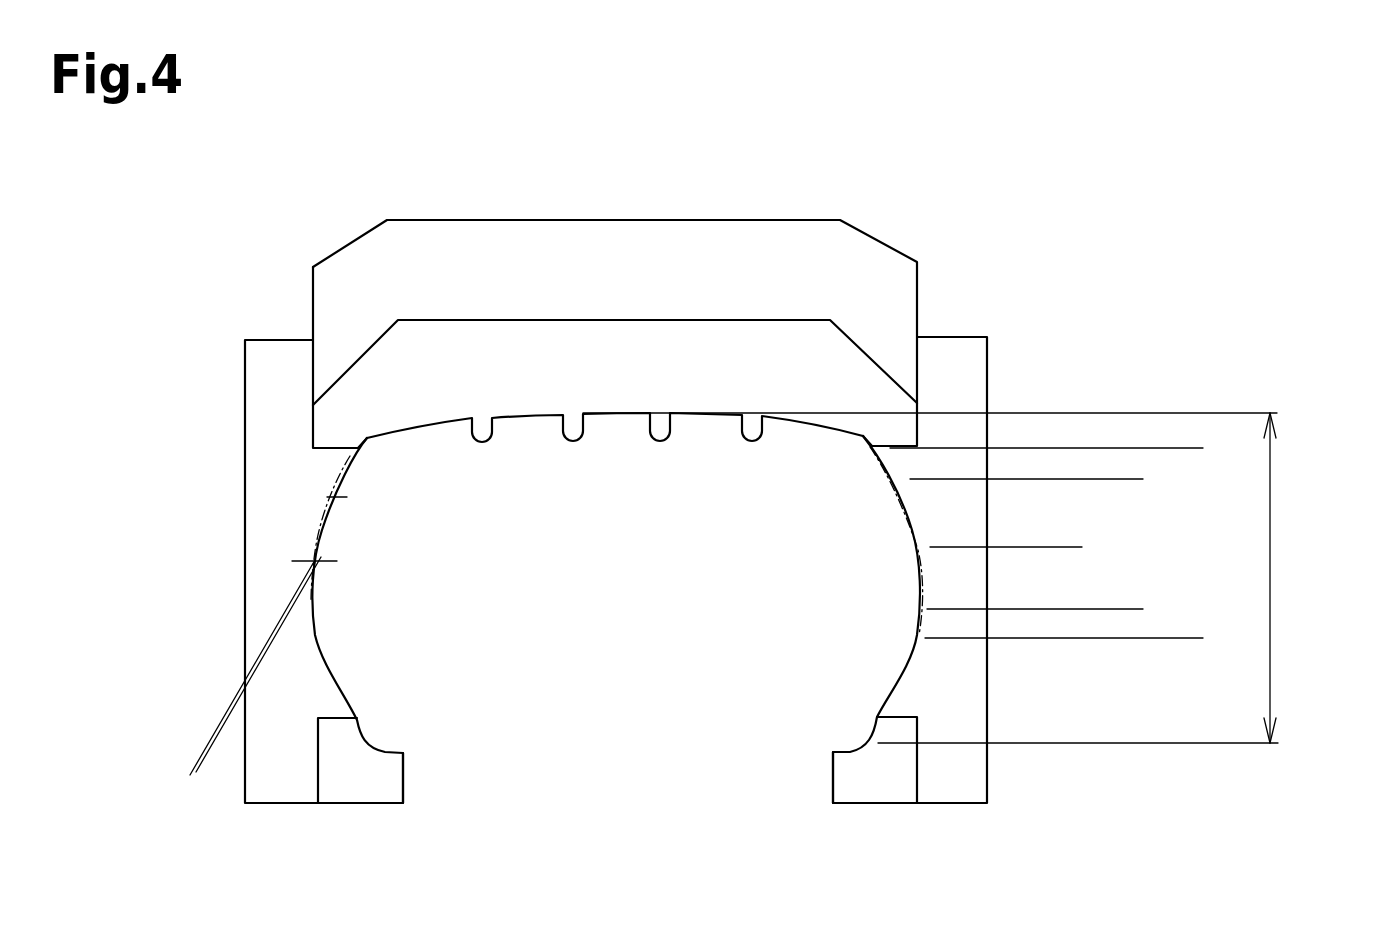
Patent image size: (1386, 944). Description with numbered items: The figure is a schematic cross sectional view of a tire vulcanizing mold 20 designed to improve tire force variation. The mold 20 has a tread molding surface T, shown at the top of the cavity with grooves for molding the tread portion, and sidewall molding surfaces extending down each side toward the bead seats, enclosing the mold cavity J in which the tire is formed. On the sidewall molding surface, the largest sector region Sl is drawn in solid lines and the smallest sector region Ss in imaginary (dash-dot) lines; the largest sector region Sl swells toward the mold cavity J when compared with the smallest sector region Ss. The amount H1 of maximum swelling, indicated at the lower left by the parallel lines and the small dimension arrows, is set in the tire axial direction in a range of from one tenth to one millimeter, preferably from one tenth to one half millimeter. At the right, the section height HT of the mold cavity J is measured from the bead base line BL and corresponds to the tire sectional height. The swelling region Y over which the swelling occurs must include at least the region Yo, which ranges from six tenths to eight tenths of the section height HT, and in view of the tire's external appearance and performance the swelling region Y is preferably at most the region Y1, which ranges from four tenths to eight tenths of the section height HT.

The vulcanizing mold 20 is at (1050, 337).
The tread molding surface T is at (615, 417).
The largest sector region Sl is at (320, 597).
The smallest sector region Ss is at (345, 496).
The mold cavity J is at (628, 640).
The amount of maximum swelling H1 is at (245, 770).
The section height HT is at (1270, 575).
The bead base line BL is at (1078, 745).
The swelling region Y is at (1195, 448).
The region Y1 is at (1130, 479).
The region Y0 Yo is at (1075, 479).